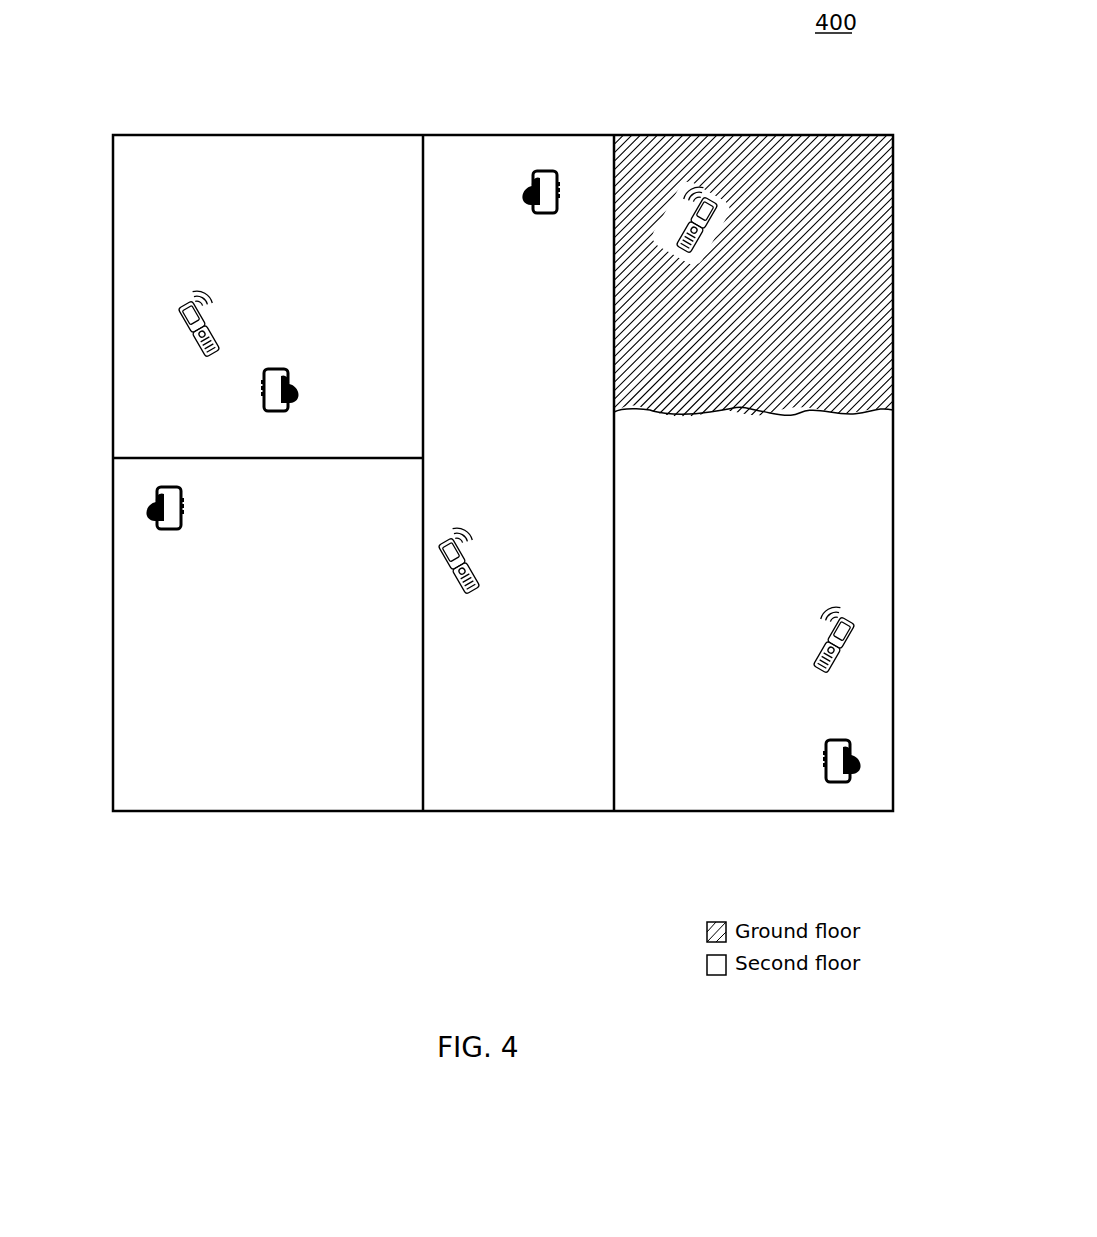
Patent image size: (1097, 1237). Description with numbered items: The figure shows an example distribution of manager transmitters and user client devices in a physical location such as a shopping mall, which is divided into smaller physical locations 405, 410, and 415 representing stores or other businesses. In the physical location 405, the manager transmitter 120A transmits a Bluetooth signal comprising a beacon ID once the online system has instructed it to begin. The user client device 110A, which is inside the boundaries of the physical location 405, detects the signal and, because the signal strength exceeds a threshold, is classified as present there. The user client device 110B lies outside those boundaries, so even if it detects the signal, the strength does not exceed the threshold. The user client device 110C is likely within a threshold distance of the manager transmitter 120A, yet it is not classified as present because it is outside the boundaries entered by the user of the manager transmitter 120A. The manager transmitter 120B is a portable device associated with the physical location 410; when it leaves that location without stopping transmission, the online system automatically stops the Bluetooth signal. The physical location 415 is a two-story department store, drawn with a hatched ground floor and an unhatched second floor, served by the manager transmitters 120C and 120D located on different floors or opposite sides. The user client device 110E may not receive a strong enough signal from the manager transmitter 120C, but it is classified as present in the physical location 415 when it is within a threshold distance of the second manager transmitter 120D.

The physical location 405 is at (398, 184).
The physical location 410 is at (391, 502).
The physical location 415 is at (873, 184).
The user client device 110A is at (258, 388).
The user client device 110B is at (560, 186).
The user client device 110C is at (145, 504).
The user client device 110E is at (868, 758).
The manager transmitter 120A is at (185, 327).
The manager transmitter 120B is at (482, 600).
The manager transmitter 120C is at (712, 224).
The manager transmitter 120D is at (855, 652).